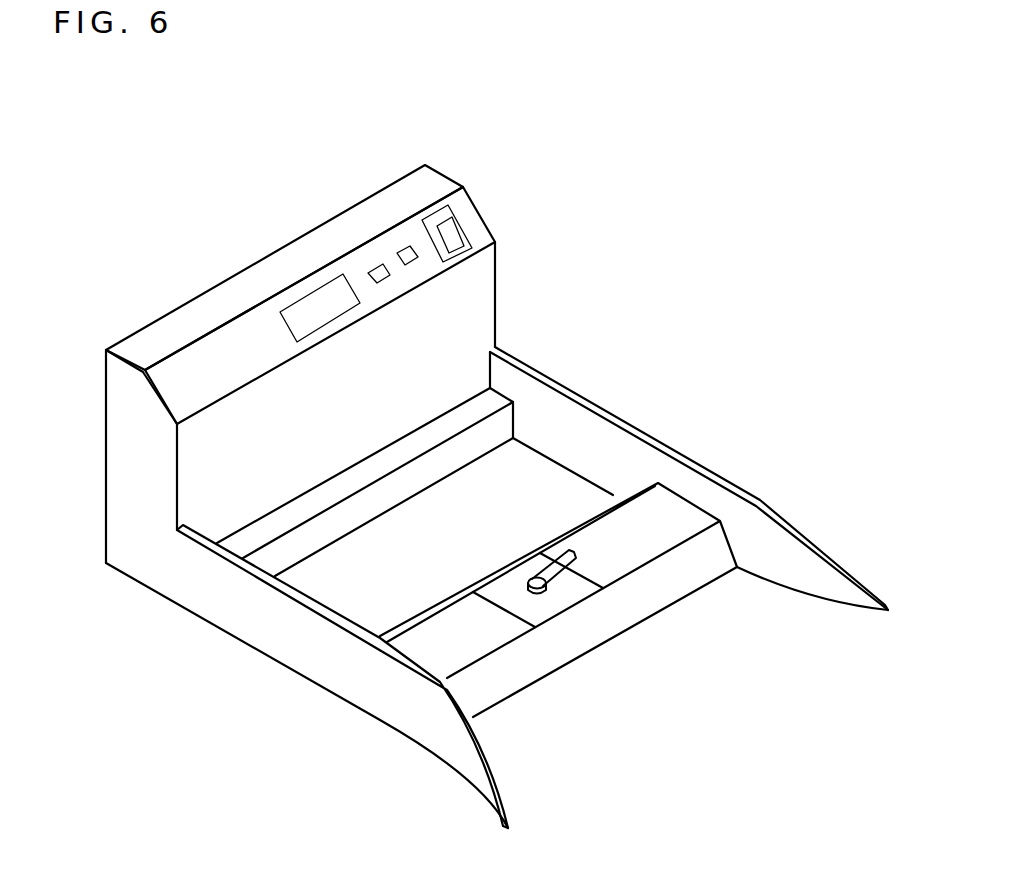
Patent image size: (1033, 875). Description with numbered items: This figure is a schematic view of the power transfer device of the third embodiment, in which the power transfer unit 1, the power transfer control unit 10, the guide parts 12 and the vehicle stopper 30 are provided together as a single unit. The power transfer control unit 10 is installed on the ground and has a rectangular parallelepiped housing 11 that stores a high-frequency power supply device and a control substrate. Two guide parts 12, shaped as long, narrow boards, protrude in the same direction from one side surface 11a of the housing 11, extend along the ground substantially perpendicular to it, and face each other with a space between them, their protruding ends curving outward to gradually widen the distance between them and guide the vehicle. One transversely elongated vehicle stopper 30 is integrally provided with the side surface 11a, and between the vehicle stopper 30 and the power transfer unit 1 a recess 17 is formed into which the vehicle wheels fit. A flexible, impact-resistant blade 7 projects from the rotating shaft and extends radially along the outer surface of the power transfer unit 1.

The power transfer control unit 10 is at (373, 197).
The housing 11 is at (123, 422).
The side surface 11a is at (482, 285).
The guide parts 12 is at (675, 452).
The vehicle stopper 30 is at (497, 400).
The recess 17 is at (528, 478).
The power transfer unit 1 is at (560, 598).
The blade 7 is at (577, 560).